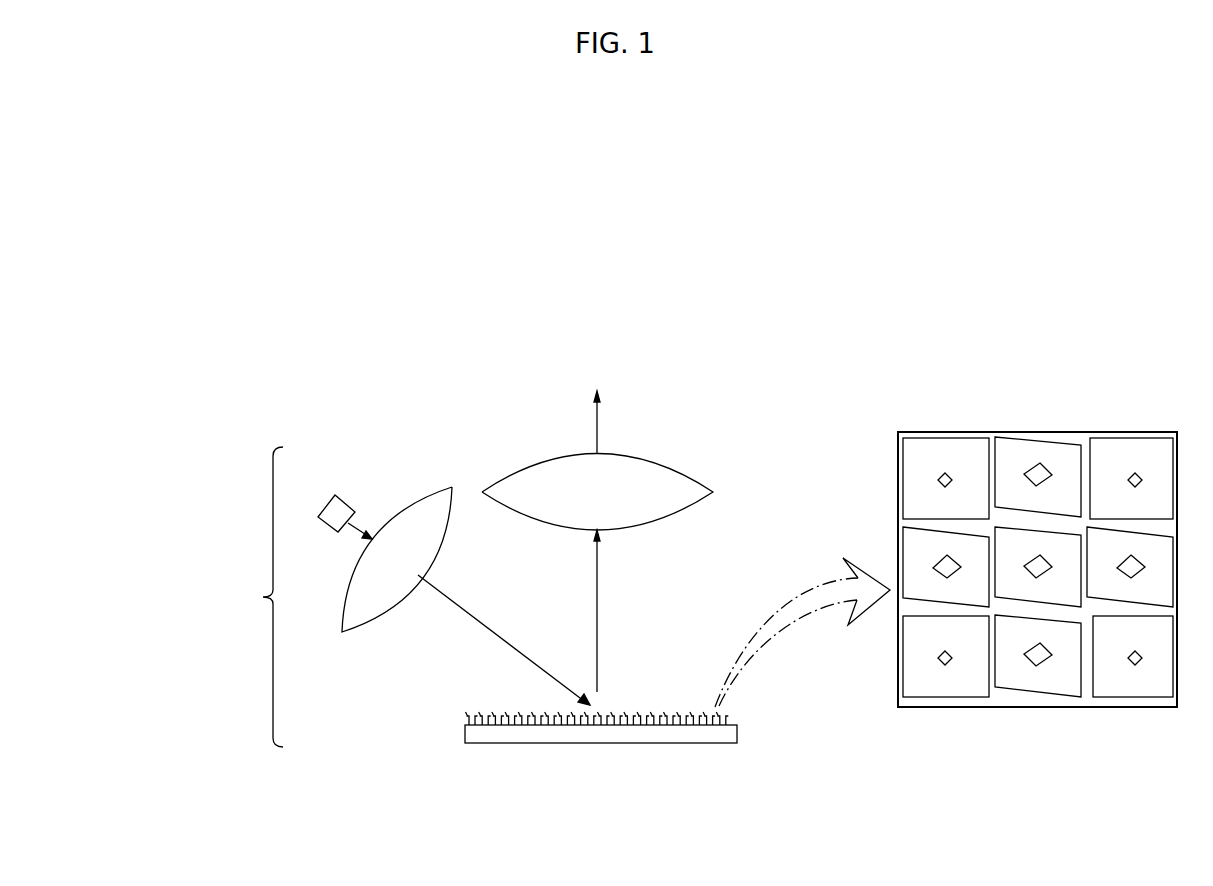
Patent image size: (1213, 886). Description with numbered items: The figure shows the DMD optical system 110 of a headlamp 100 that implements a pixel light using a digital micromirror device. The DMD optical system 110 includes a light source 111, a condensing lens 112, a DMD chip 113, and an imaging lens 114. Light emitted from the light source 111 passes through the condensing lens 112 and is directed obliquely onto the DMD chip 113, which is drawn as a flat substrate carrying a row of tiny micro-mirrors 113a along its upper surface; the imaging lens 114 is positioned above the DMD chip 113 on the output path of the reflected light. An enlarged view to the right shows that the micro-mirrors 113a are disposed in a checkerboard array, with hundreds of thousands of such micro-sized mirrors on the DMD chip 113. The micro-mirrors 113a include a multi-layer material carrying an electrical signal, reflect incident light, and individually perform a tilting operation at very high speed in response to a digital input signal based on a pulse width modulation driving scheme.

The headlamp 100 is at (670, 426).
The DMD optical system 110 is at (254, 597).
The light source 111 is at (330, 510).
The condensing lens 112 is at (430, 507).
The DMD chip 113 is at (692, 735).
The micro-mirrors 113a is at (677, 712).
The imaging lens 114 is at (688, 487).